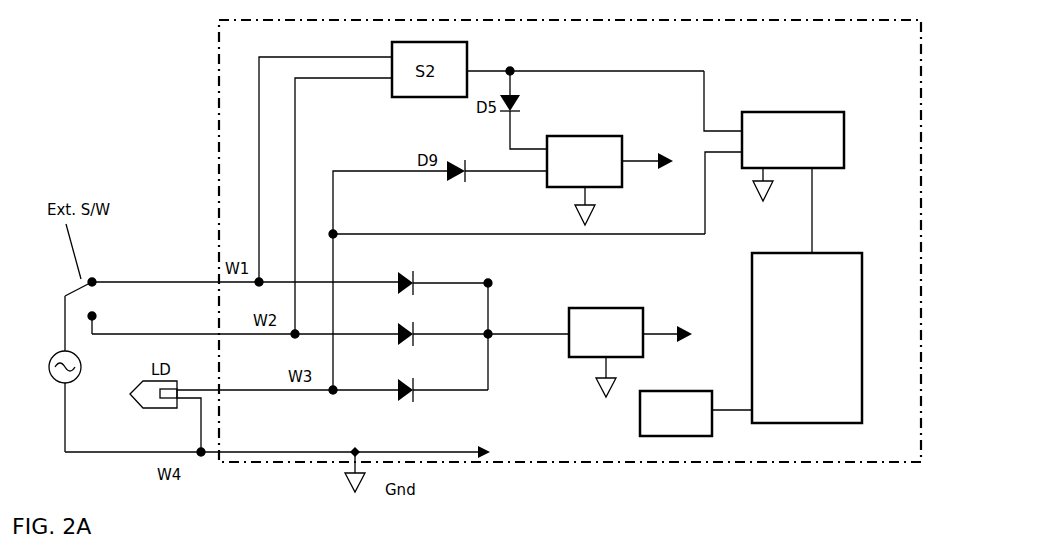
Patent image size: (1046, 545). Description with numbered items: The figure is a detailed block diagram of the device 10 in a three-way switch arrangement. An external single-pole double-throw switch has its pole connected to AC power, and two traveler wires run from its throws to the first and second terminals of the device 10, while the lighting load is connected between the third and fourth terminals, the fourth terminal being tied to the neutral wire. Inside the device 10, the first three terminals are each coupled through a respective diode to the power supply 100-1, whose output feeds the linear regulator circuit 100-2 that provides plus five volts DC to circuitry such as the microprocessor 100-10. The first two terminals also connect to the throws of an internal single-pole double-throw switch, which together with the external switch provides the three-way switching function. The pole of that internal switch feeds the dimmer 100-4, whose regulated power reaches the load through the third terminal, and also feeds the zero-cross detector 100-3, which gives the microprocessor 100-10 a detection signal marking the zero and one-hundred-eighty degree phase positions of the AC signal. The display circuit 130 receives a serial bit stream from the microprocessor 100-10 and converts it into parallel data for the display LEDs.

The device 10 is at (158, 36).
The power supply 100-1 is at (470, 269).
The linear regulator circuit 100-2 is at (611, 308).
The zero-cross (ZC) detector 100-3 is at (586, 136).
The dimmer 100-4 is at (805, 118).
The microprocessor 100-10 is at (833, 320).
The display circuit 130 is at (691, 423).